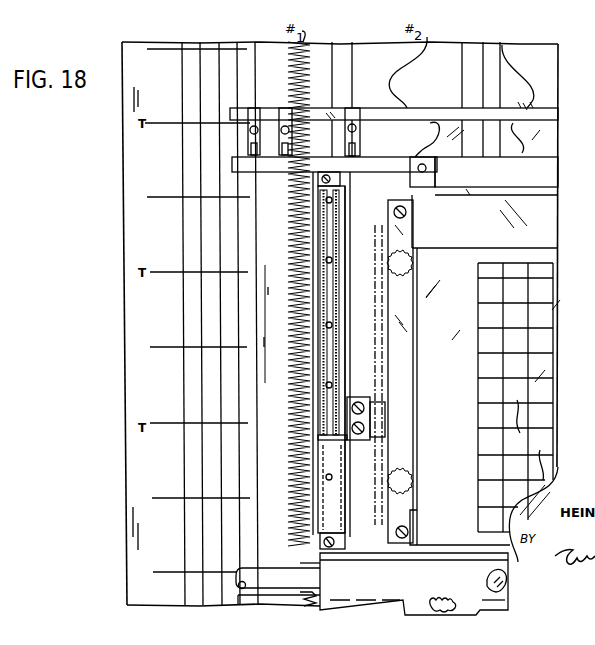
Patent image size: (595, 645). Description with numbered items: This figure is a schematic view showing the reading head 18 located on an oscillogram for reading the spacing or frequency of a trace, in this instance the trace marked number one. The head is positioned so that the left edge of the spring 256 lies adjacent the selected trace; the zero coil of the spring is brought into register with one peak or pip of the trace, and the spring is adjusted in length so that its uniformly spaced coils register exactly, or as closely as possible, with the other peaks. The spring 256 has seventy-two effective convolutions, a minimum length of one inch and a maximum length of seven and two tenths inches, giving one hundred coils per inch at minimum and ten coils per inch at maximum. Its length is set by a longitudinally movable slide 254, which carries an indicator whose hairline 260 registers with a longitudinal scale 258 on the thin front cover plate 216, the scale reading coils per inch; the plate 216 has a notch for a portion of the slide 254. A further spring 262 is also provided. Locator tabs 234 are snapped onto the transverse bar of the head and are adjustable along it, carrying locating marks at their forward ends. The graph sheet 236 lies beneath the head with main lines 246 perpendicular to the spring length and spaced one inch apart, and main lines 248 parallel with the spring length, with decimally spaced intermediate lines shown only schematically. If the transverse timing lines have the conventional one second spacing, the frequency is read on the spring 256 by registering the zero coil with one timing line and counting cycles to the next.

The reading head 18 is at (538, 225).
The front cover plate 216 is at (458, 227).
The locator tabs 234 is at (355, 152).
The graph sheet 236 is at (453, 452).
The main lines 246 is at (502, 345).
The main lines 248 is at (535, 440).
The slide 254 is at (370, 398).
The spring 256 is at (292, 253).
The longitudinal scale 258 is at (377, 305).
The hairline 260 is at (377, 417).
The spring 262 is at (350, 197).